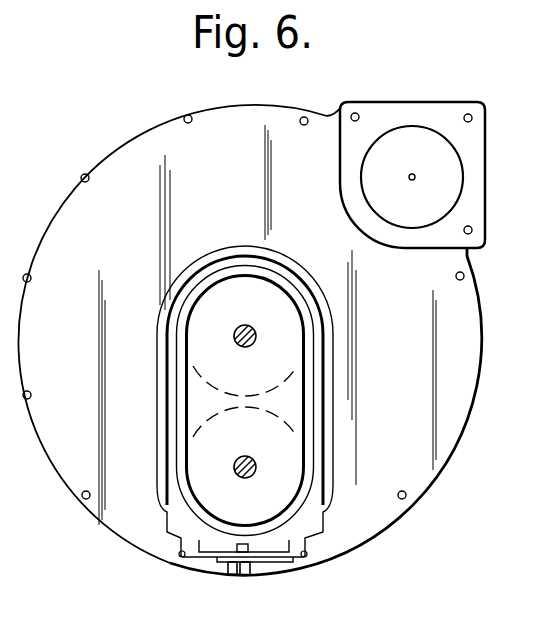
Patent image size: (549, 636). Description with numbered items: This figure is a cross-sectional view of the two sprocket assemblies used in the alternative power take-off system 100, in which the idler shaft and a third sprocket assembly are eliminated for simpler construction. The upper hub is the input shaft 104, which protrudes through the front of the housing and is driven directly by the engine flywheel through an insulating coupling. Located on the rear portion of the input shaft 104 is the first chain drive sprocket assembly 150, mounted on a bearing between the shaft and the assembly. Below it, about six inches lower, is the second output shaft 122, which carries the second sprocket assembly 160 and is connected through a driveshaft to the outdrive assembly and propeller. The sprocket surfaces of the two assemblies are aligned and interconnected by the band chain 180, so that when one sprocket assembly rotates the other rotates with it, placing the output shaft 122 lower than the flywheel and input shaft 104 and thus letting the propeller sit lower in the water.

The power take-off system 100 is at (463, 468).
The input shaft 104 is at (256, 336).
The second output shaft 122 is at (256, 462).
The first chain drive sprocket assembly 150 is at (283, 312).
The second sprocket assembly 160 is at (287, 484).
The band chain 180 is at (310, 382).